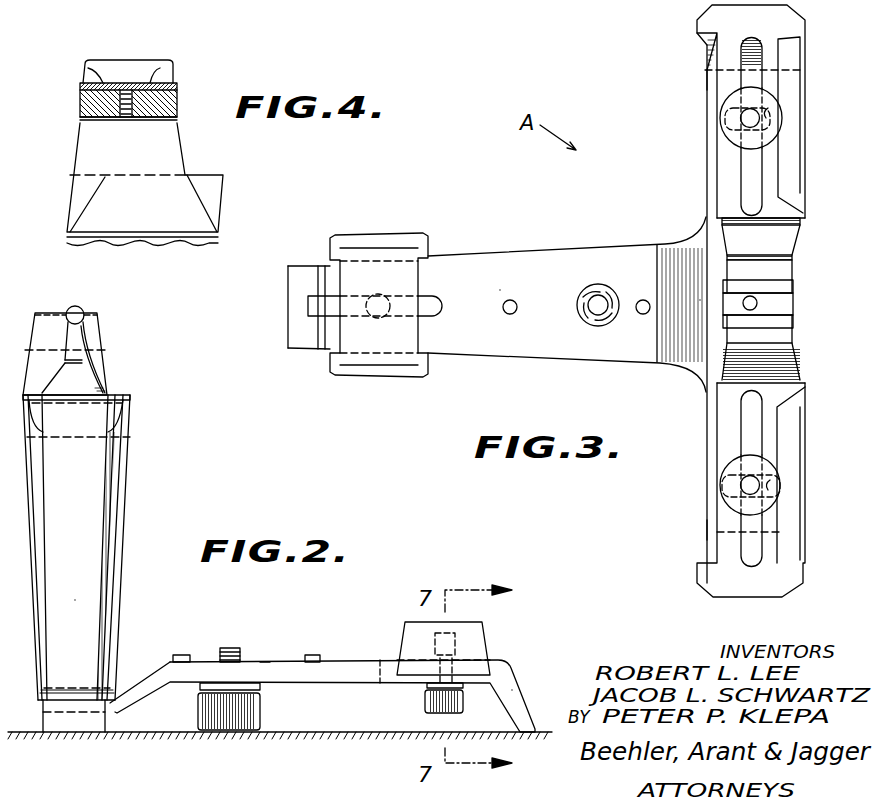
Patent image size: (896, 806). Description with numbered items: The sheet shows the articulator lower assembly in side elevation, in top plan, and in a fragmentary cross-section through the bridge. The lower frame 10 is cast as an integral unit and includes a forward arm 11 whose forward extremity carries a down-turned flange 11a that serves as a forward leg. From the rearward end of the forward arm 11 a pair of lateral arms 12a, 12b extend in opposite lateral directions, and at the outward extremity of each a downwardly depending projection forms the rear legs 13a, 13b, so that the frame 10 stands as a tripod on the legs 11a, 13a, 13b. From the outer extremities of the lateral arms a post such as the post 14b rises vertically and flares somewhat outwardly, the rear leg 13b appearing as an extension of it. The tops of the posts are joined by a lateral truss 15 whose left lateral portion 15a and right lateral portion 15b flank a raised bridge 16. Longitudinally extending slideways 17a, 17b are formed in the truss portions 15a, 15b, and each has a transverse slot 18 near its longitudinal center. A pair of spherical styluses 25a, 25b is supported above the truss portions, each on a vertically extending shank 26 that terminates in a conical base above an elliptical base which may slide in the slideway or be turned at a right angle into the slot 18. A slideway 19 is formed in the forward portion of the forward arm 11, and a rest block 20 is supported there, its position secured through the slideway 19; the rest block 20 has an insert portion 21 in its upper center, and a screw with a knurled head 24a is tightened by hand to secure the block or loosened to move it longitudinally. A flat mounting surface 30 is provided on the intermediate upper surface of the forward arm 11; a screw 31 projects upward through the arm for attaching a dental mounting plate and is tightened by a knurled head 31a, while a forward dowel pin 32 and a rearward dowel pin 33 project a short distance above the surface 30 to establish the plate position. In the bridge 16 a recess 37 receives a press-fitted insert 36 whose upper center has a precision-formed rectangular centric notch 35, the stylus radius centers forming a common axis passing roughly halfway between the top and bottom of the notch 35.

In FIG. 3, the lower frame 10 is at (580, 206).
In FIG. 2, the lower frame 10 is at (150, 514).
In FIG. 3, the forward arm 11 is at (517, 258).
In FIG. 2, the forward arm 11 is at (346, 682).
In FIG. 4, the down-turned flange 11a is at (416, 6).
In FIG. 3, the down-turned flange 11a is at (307, 341).
In FIG. 2, the down-turned flange 11a is at (520, 692).
In FIG. 3, the lateral arm 12a is at (706, 80).
In FIG. 3, the lateral arm 12b is at (706, 527).
In FIG. 4, the rear leg 13a is at (25, 11).
In FIG. 2, the rear leg 13b is at (72, 725).
In FIG. 2, the post 14b is at (88, 473).
In FIG. 3, the lateral truss 15 is at (817, 230).
In FIG. 3, the left lateral truss portion 15a is at (800, 538).
In FIG. 3, the right lateral truss portion 15b is at (795, 58).
In FIG. 4, the bridge 16 is at (76, 162).
In FIG. 3, the bridge 16 is at (794, 267).
In FIG. 2, the bridge 16 is at (34, 342).
In FIG. 3, the longitudinal slideway 17a is at (745, 425).
In FIG. 3, the longitudinal slideway 17b is at (745, 170).
In FIG. 3, the transverse slot 18 is at (772, 112).
In FIG. 3, the slideway 19 is at (432, 298).
In FIG. 3, the rest block 20 is at (412, 233).
In FIG. 2, the rest block 20 is at (405, 636).
In FIG. 2, the insert portion 21 is at (452, 640).
In FIG. 2, the knurled head 24a is at (425, 702).
In FIG. 3, the spherical stylus 25a is at (746, 488).
In FIG. 3, the spherical stylus 25b is at (745, 119).
In FIG. 2, the spherical stylus 25b is at (80, 320).
In FIG. 3, the shank 26 is at (730, 103).
In FIG. 2, the shank 26 is at (80, 380).
In FIG. 3, the flat mounting surface 30 is at (531, 322).
In FIG. 2, the flat mounting surface 30 is at (264, 660).
In FIG. 3, the screw 31 is at (598, 284).
In FIG. 2, the screw 31 is at (232, 648).
In FIG. 4, the knurled head 31a is at (289, 6).
In FIG. 2, the knurled head 31a is at (224, 725).
In FIG. 3, the forward dowel pin 32 is at (508, 314).
In FIG. 2, the forward dowel pin 32 is at (312, 655).
In FIG. 3, the rearward dowel pin 33 is at (643, 314).
In FIG. 2, the rearward dowel pin 33 is at (180, 655).
In FIG. 4, the rectangular centric notch 35 is at (150, 83).
In FIG. 3, the rectangular centric notch 35 is at (782, 308).
In FIG. 4, the insert 36 is at (84, 83).
In FIG. 4, the recess 37 is at (103, 83).